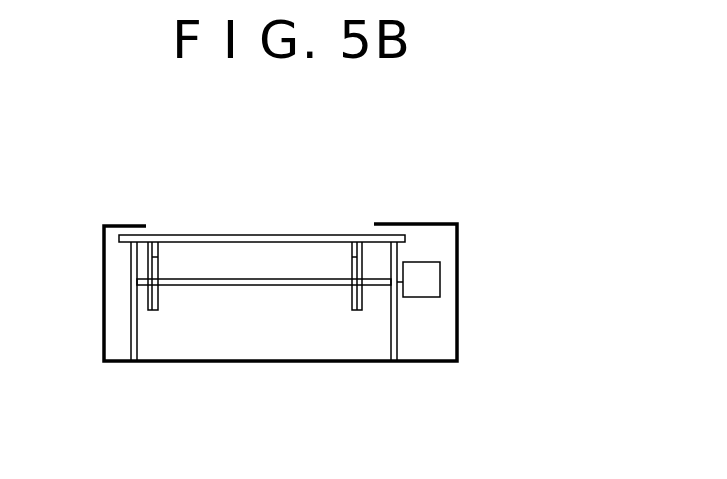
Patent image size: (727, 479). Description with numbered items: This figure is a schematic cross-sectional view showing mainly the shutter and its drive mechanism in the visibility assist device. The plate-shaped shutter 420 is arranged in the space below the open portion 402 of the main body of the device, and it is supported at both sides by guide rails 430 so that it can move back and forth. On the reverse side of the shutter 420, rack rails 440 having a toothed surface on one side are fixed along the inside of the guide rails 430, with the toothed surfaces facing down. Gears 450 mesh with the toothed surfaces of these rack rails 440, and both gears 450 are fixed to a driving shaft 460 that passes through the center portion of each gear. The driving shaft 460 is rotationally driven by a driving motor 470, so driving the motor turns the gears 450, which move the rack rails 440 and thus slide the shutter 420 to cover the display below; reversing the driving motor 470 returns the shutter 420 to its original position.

The open portion 402 is at (147, 226).
The shutter 420 is at (351, 235).
The guide rails 430 is at (133, 304).
The rack rails 440 is at (157, 257).
The gears 450 is at (157, 303).
The driving shaft 460 is at (258, 283).
The driving motor 470 is at (425, 262).